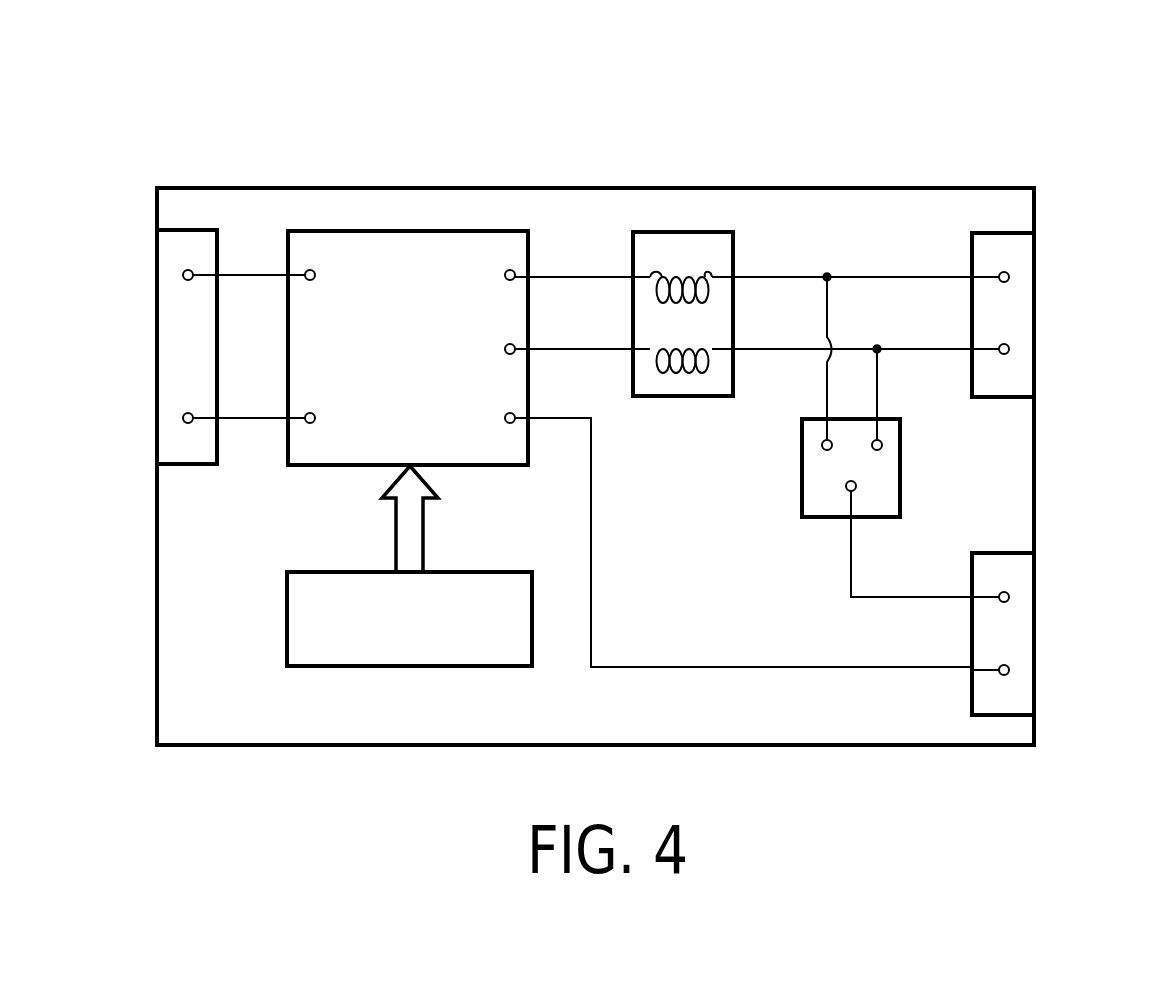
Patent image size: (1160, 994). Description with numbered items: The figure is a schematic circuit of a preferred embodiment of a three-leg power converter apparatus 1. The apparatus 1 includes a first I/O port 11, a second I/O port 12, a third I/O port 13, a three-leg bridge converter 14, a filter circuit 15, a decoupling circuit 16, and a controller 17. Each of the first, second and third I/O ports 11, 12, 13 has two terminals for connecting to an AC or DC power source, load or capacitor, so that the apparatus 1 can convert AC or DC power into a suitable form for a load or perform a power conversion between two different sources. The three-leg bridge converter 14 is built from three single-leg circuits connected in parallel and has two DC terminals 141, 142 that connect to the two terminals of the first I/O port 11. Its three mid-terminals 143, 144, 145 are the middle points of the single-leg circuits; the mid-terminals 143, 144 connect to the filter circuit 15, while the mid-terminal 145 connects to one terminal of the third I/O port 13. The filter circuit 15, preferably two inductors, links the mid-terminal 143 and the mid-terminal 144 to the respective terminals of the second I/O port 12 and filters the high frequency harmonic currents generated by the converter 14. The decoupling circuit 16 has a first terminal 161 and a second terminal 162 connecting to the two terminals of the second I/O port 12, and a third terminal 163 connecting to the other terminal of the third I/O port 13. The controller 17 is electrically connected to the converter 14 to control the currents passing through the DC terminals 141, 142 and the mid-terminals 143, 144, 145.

The three-leg power converter apparatus 1 is at (332, 133).
The first I/O port 11 is at (165, 258).
The second I/O port 12 is at (1015, 398).
The third I/O port 13 is at (1033, 686).
The three-leg bridge converter 14 is at (398, 230).
The DC terminal 141 is at (305, 270).
The DC terminal 142 is at (304, 422).
The mid-terminal 143 is at (513, 267).
The mid-terminal 144 is at (515, 353).
The mid-terminal 145 is at (512, 424).
The filter circuit 15 is at (690, 232).
The decoupling circuit 16 is at (902, 489).
The first terminal 161 is at (821, 448).
The second terminal 162 is at (883, 449).
The third terminal 163 is at (846, 490).
The controller 17 is at (295, 630).